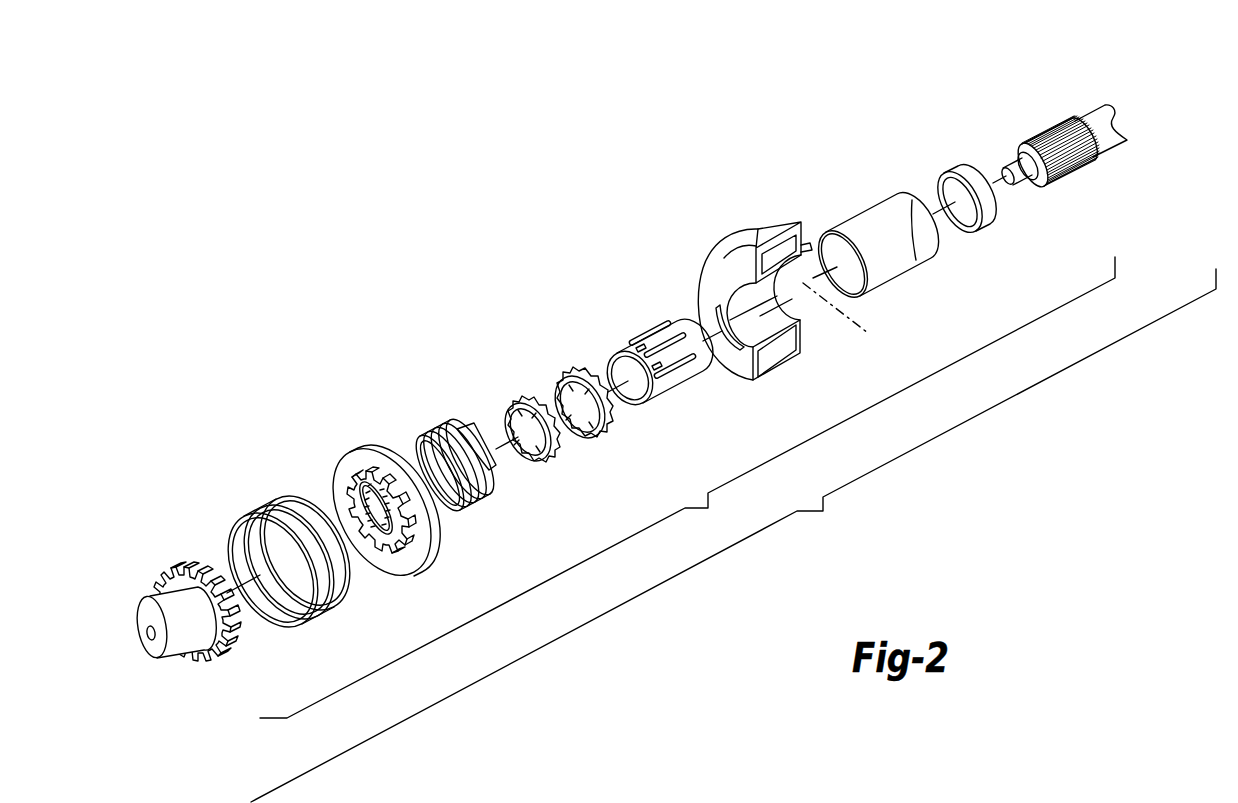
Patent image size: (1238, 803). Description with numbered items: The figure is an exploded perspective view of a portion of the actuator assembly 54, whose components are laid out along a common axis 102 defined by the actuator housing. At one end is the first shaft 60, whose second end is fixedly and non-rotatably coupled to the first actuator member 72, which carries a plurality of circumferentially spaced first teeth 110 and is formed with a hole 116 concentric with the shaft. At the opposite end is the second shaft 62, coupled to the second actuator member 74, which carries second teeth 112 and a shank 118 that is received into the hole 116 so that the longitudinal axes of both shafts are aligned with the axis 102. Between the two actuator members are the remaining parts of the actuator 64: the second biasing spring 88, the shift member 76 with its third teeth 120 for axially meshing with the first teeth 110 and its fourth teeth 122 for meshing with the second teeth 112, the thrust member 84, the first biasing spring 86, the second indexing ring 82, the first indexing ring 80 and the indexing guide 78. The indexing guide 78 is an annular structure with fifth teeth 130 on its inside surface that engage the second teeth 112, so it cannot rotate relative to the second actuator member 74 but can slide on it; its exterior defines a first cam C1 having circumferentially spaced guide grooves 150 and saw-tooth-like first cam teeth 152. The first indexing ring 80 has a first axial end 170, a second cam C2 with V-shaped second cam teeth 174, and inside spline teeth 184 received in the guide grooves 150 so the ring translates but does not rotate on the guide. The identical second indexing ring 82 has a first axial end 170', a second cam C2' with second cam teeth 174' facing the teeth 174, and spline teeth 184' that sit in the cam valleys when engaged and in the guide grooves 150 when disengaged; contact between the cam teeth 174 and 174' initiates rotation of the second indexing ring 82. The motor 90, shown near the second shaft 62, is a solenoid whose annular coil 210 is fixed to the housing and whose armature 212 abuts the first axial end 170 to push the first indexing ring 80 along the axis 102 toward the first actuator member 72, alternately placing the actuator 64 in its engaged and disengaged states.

The actuator assembly 54 is at (733, 535).
The actuator 64 is at (687, 487).
The first actuator member 72 is at (157, 614).
The first shaft 60 is at (143, 616).
The first teeth 110 is at (218, 652).
The hole 116 is at (148, 637).
The second biasing spring 88 is at (270, 516).
The shift member 76 is at (363, 497).
The third teeth 120 is at (358, 533).
The fourth teeth 122 is at (380, 503).
The thrust member 84 is at (480, 483).
The first biasing spring 86 is at (468, 500).
The second indexing ring 82 is at (523, 400).
The first indexing ring 80 is at (562, 383).
The first axial end 170 is at (620, 403).
The first axial end 170' is at (500, 408).
The second cam teeth 174 is at (566, 372).
The second cam teeth 174' is at (502, 390).
The spline teeth 184 is at (609, 436).
The spline teeth 184' is at (541, 450).
The first cam C1 is at (665, 404).
The second cam C2 is at (664, 447).
The second cam C2' is at (596, 485).
The indexing guide 78 is at (691, 324).
The fifth teeth 130 is at (617, 372).
The guide grooves 150 is at (695, 340).
The first cam teeth 152 is at (654, 336).
The motor 90 is at (818, 231).
The coil 210 is at (771, 230).
The armature 212 is at (860, 227).
The axis 102 is at (852, 311).
The second actuator member 74 is at (1064, 124).
The second shaft 62 is at (1097, 112).
The second teeth 112 is at (1079, 153).
The shank 118 is at (1023, 178).